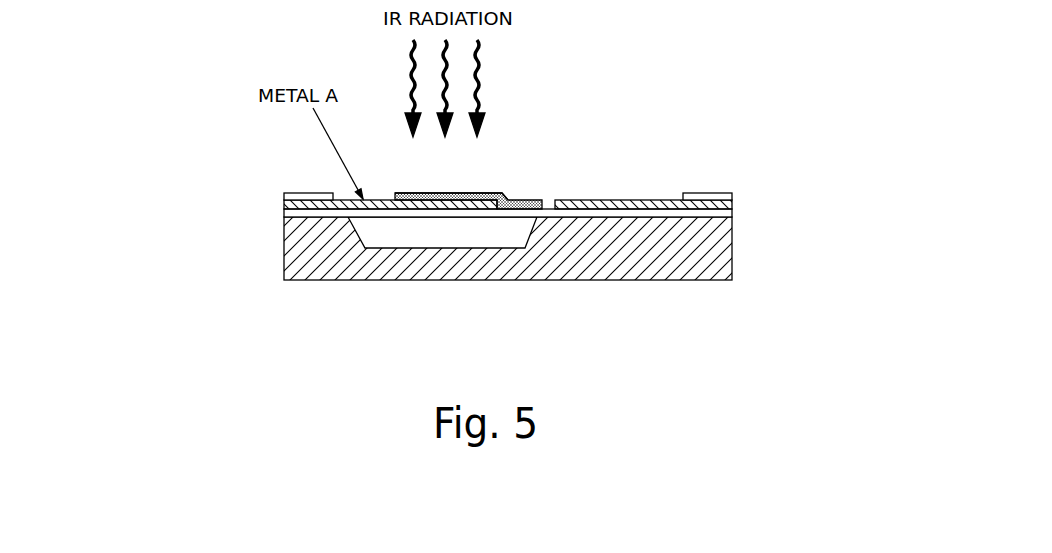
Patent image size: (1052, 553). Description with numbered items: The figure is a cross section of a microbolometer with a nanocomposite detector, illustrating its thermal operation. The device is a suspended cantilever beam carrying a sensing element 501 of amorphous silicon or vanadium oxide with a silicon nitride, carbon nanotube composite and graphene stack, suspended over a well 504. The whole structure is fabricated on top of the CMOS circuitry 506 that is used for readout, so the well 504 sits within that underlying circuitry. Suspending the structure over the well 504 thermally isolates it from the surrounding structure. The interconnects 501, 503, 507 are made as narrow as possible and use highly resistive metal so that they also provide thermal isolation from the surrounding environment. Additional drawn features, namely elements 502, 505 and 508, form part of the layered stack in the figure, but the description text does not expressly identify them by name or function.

The interconnect 501 is at (703, 192).
The metal A 502 is at (608, 198).
The interconnect 503 is at (483, 190).
The well 504 is at (492, 232).
The silicon nitride bridge 505 is at (460, 214).
The CMOS circuitry 506 is at (285, 250).
The interconnect 507 is at (297, 192).
The VOx-CNT-Si3N4-graphene nanocomposite 508 is at (450, 190).